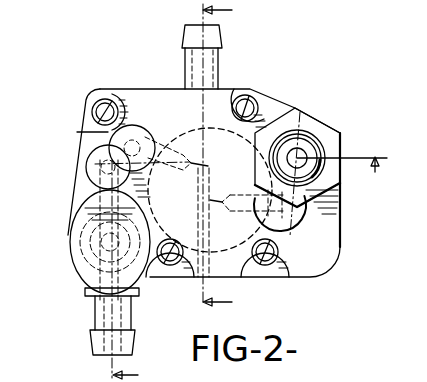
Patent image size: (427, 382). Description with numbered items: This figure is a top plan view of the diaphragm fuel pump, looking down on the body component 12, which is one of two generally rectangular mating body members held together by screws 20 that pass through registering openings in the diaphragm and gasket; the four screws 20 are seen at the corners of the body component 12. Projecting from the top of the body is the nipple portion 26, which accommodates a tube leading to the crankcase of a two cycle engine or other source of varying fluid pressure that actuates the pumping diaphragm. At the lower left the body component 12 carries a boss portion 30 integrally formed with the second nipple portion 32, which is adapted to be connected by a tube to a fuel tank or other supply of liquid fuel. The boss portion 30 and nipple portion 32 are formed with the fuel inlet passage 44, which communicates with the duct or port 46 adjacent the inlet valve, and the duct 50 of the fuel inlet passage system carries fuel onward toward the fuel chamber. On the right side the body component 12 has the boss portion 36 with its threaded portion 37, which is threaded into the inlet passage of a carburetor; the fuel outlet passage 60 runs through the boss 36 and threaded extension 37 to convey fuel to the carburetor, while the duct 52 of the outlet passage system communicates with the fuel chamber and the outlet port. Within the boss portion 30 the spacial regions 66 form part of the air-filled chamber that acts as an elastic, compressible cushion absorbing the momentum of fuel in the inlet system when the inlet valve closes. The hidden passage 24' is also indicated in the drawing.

The body component 12 is at (342, 222).
The screws 20 is at (96, 106).
The hidden passage 24' is at (185, 237).
The nipple portion 26 is at (212, 62).
The boss portion 30 is at (72, 258).
The second nipple portion 32 is at (100, 315).
The boss portion 36 is at (335, 142).
The threaded portion 37 is at (300, 137).
The fuel inlet passage 44 is at (87, 230).
The duct or port 46 is at (87, 165).
The duct 50 is at (146, 144).
The duct 52 is at (290, 237).
The fuel outlet passage 60 is at (302, 150).
The spacial regions 66 is at (85, 268).